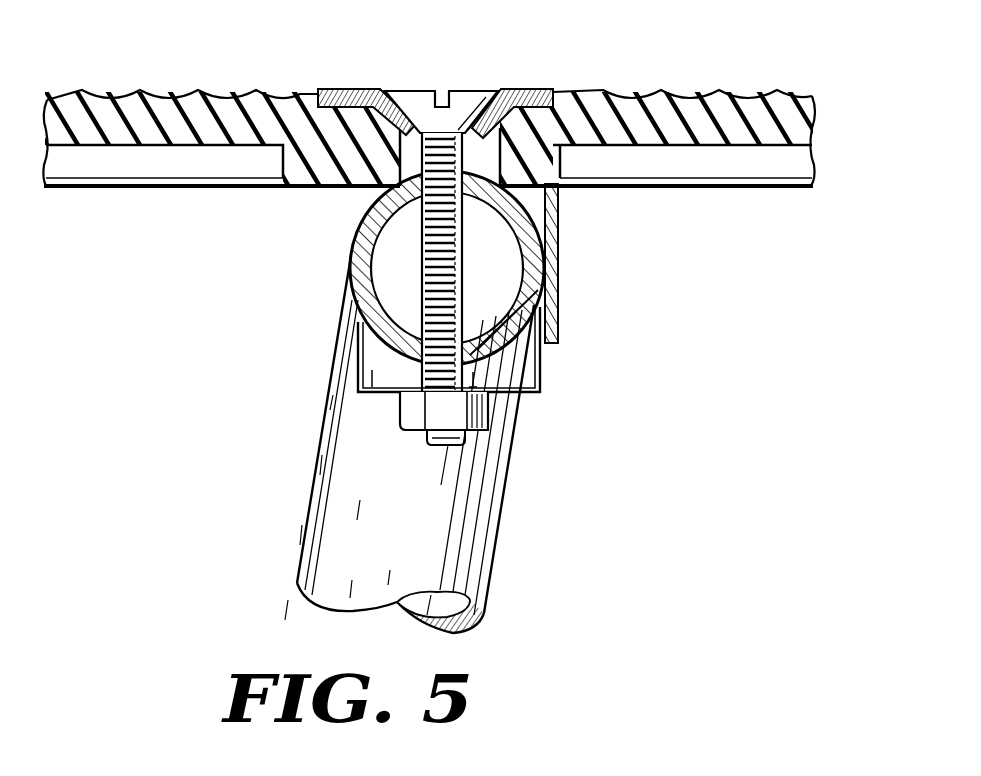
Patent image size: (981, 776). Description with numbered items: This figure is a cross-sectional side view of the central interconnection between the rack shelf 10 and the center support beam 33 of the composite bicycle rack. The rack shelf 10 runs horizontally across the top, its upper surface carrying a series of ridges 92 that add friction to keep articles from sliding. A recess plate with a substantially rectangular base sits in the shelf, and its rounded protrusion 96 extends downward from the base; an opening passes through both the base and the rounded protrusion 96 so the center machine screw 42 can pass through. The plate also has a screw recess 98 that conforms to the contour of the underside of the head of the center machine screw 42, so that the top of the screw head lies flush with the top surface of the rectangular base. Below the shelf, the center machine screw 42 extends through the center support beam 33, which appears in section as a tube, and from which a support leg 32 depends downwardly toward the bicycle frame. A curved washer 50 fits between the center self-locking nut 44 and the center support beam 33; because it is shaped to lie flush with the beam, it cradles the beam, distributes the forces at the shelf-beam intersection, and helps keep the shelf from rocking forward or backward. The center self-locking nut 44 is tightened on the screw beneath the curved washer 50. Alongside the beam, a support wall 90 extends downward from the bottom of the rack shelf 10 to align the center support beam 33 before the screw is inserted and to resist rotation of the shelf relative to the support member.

The rack shelf 10 is at (220, 100).
The ridges 92 is at (665, 95).
The rounded protrusion 96 is at (373, 115).
The screw recess 98 is at (405, 92).
The center machine screw 42 is at (419, 105).
The center support beam 33 is at (354, 262).
The support wall 90 is at (555, 268).
The support leg 32 is at (337, 534).
The curved washer 50 is at (537, 370).
The center self-locking nut 44 is at (452, 410).